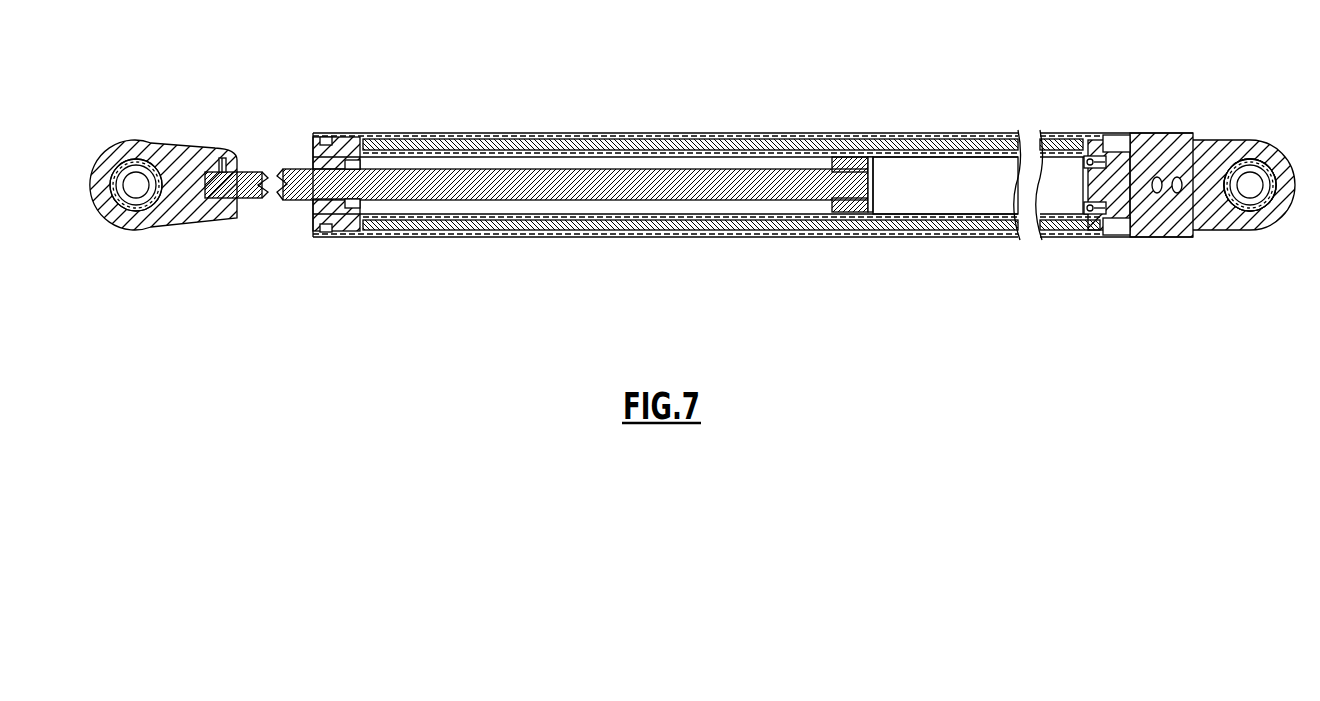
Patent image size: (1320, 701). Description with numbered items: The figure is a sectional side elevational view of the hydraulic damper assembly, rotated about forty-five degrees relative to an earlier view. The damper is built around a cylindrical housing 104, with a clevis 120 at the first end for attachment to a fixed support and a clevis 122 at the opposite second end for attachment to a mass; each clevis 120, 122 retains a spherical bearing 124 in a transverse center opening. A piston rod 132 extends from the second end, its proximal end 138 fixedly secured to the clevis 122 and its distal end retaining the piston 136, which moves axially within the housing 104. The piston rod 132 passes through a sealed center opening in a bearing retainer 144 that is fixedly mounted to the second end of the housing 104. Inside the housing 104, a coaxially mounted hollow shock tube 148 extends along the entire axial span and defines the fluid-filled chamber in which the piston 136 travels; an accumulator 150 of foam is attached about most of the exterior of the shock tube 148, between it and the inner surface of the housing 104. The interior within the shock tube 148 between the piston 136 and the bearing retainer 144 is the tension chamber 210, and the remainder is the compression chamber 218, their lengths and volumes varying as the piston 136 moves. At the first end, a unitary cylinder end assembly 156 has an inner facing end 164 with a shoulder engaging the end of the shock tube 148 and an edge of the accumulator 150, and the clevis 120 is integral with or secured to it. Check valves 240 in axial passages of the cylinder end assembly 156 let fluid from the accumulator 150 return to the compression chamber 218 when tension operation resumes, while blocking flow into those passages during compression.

The housing 104 is at (548, 133).
The clevis 120 is at (1227, 140).
The clevis 122 is at (175, 143).
The spherical bearing 124 is at (1253, 160).
The piston rod 132 is at (520, 168).
The piston 136 is at (834, 156).
The proximal end 138 is at (219, 160).
The bearing retainer 144 is at (333, 137).
The shock tube 148 is at (808, 215).
The accumulator 150 is at (898, 138).
The cylinder end assembly 156 is at (1157, 133).
The inner facing end 164 is at (1076, 170).
The tension chamber 210 is at (666, 201).
The compression chamber 218 is at (961, 172).
The check valve 240 is at (1089, 156).